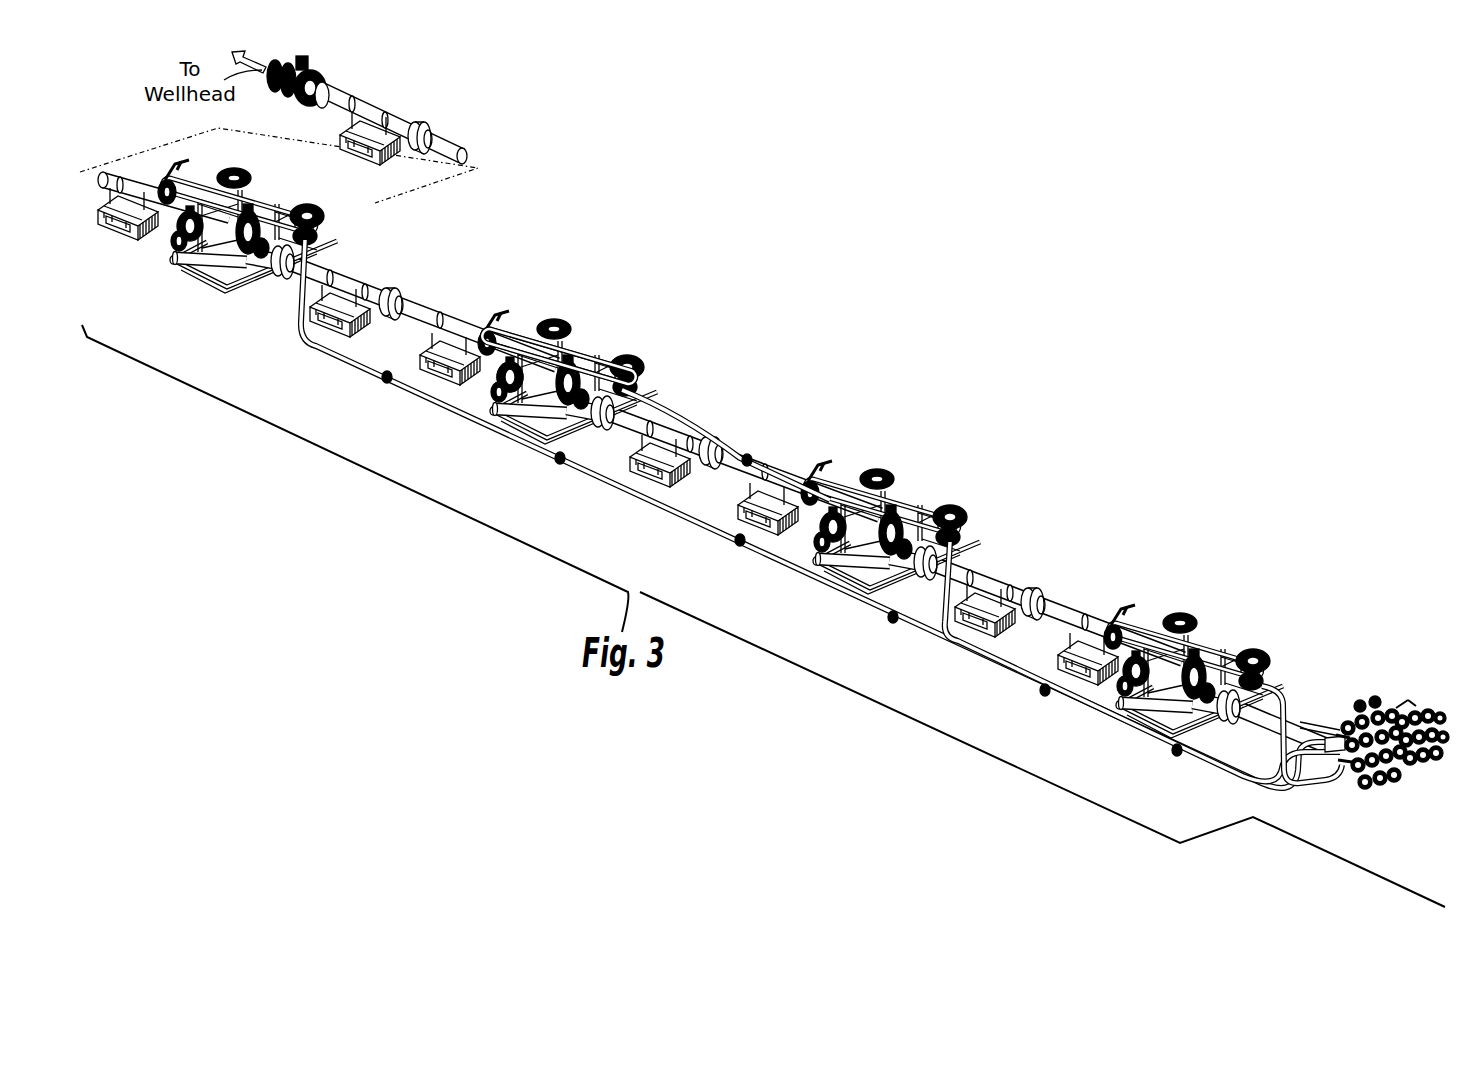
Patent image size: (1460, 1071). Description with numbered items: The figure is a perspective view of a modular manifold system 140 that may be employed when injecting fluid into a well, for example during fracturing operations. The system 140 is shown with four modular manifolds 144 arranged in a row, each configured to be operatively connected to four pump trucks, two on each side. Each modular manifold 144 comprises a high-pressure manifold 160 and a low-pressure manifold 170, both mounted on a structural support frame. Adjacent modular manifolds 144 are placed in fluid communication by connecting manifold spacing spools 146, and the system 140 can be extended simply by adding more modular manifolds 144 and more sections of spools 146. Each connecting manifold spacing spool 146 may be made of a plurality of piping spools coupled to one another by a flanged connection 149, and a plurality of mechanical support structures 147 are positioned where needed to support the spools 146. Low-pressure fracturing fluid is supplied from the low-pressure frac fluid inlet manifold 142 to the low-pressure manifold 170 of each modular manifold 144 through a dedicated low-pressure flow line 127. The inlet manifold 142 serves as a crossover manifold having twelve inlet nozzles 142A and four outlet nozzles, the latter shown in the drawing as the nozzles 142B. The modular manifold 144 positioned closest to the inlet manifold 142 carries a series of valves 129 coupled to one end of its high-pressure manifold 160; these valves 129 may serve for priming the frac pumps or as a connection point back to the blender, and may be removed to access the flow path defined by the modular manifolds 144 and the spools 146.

The modular manifold system 140 is at (843, 360).
The low-pressure flow line 127 is at (400, 386).
The valves 129 is at (1282, 700).
The low-pressure frac fluid inlet manifold 142 is at (1375, 717).
The inlet nozzles 142A is at (1387, 780).
The manifold section 142B is at (1383, 708).
The modular manifold 144 is at (203, 292).
The connecting manifold spacing spool 146 is at (374, 103).
The mechanical support structure 147 is at (152, 235).
The flanged connection 149 is at (432, 132).
The high-pressure manifold 160 is at (508, 388).
The low-pressure manifold 170 is at (586, 345).